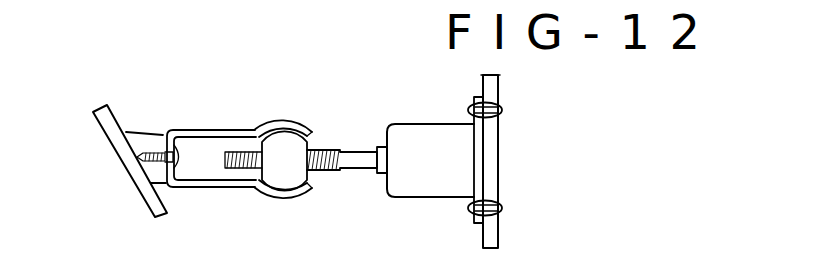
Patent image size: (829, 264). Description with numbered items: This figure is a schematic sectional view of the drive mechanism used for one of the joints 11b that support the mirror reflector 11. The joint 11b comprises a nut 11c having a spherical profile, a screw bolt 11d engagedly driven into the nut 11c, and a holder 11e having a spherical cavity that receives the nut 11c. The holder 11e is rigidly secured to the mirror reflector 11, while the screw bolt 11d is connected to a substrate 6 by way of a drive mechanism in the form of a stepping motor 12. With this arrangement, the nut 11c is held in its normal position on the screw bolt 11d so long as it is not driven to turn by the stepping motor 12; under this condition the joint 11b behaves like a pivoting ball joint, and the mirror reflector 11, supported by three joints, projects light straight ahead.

The substrate 6 is at (492, 182).
The mirror reflector 11 is at (118, 137).
The joint 11b is at (195, 113).
The nut 11c is at (288, 178).
The screw bolt 11d is at (328, 152).
The holder 11e is at (210, 187).
The stepping motor 12 is at (437, 177).